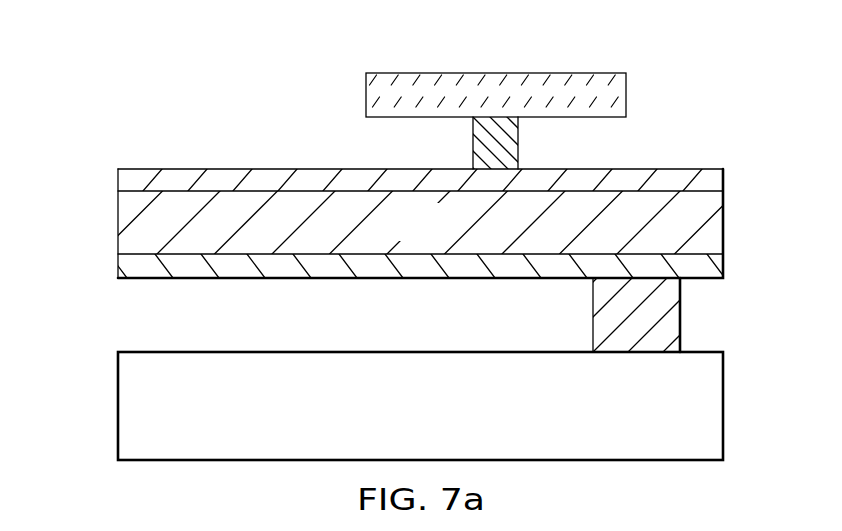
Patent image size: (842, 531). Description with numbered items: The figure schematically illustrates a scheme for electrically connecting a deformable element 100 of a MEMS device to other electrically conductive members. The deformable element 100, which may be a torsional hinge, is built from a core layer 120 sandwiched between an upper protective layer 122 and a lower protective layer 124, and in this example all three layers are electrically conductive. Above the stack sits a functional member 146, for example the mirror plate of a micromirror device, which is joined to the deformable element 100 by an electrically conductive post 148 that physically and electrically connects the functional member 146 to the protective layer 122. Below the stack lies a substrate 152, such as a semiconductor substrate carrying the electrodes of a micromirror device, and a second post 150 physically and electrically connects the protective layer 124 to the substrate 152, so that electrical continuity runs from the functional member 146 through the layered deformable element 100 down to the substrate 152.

The deformable element 100 is at (226, 61).
The core layer 120 is at (440, 235).
The protective layer 122 is at (118, 180).
The protective layer 124 is at (118, 267).
The functional member 146 is at (626, 95).
The electrically conductive post 148 is at (518, 148).
The post 150 is at (680, 318).
The substrate 152 is at (438, 418).